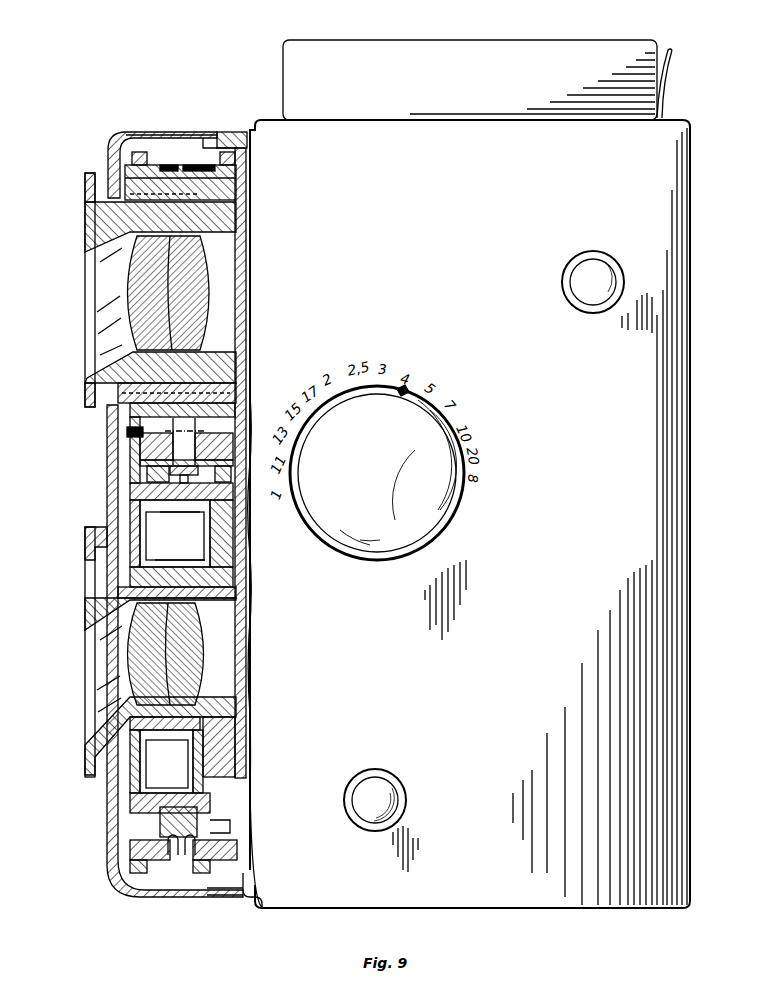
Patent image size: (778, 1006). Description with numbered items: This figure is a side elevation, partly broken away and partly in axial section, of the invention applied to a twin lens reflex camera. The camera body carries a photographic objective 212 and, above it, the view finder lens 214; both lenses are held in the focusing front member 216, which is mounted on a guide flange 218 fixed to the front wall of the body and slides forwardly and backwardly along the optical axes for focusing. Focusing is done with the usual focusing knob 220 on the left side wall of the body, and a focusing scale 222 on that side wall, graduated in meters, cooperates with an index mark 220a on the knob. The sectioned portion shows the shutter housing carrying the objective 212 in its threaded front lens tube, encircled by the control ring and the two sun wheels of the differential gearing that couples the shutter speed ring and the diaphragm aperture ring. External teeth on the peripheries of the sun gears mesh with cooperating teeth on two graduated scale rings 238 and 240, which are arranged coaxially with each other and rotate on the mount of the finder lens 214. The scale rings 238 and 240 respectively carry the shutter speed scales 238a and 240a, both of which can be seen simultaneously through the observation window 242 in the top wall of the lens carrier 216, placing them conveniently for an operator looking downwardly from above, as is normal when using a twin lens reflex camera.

The observation window 242 is at (170, 131).
The shutter speed scale 238a is at (163, 163).
The shutter speed scale 240a is at (193, 163).
The graduated scale ring 238 is at (122, 165).
The graduated scale ring 240 is at (223, 174).
The view finder lens 214 is at (138, 268).
The photographic objective 212 is at (173, 648).
The focusing front member 216 is at (118, 882).
The guide flange 218 is at (240, 888).
The focusing knob 220 is at (435, 508).
The index mark 220a is at (407, 391).
The focusing scale 222 is at (450, 407).